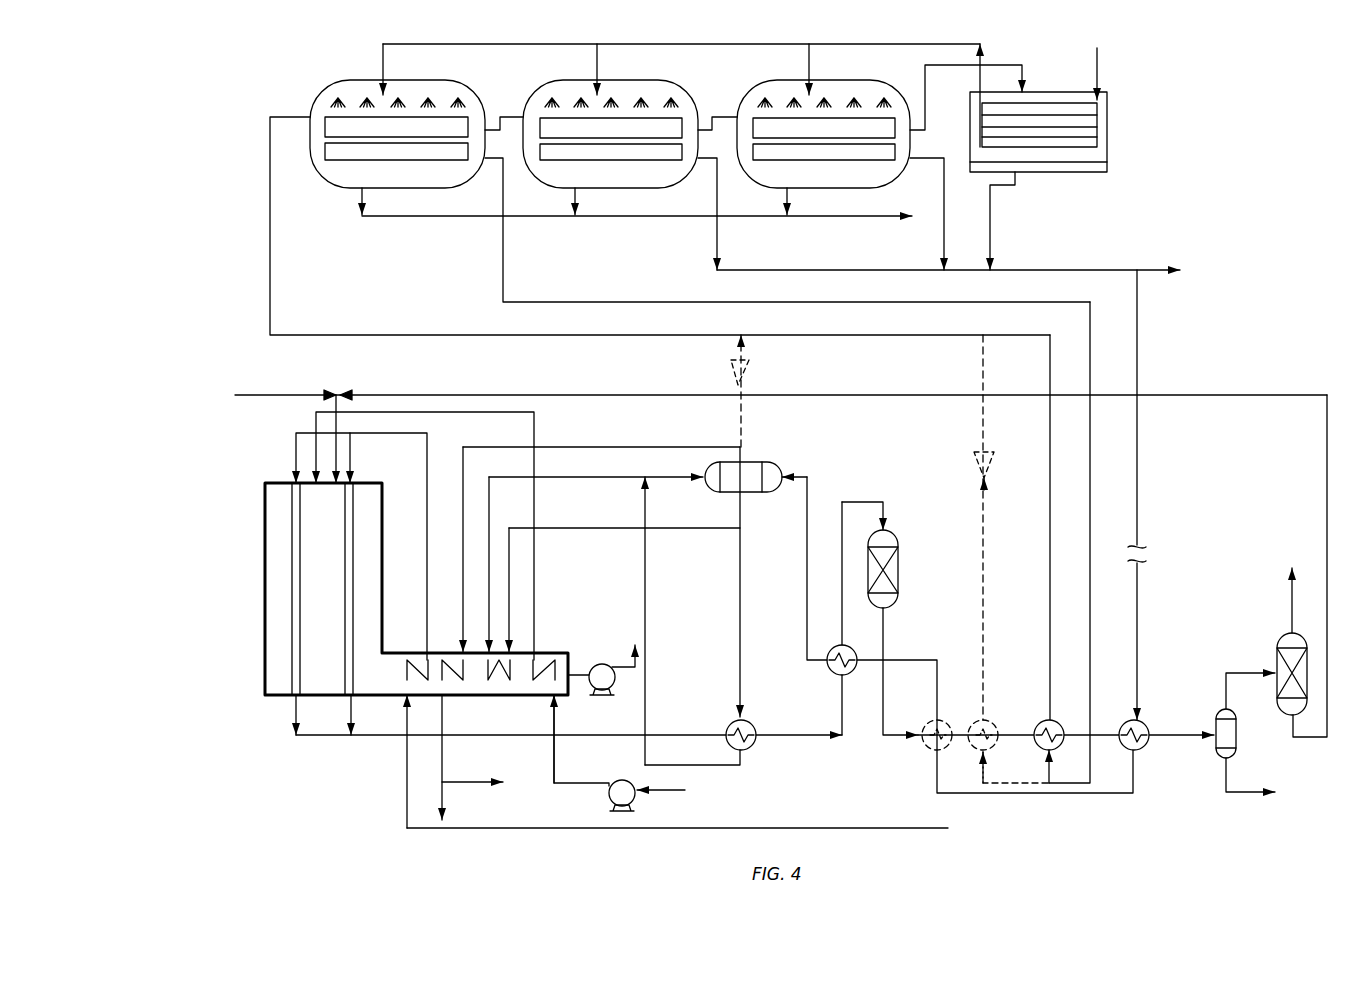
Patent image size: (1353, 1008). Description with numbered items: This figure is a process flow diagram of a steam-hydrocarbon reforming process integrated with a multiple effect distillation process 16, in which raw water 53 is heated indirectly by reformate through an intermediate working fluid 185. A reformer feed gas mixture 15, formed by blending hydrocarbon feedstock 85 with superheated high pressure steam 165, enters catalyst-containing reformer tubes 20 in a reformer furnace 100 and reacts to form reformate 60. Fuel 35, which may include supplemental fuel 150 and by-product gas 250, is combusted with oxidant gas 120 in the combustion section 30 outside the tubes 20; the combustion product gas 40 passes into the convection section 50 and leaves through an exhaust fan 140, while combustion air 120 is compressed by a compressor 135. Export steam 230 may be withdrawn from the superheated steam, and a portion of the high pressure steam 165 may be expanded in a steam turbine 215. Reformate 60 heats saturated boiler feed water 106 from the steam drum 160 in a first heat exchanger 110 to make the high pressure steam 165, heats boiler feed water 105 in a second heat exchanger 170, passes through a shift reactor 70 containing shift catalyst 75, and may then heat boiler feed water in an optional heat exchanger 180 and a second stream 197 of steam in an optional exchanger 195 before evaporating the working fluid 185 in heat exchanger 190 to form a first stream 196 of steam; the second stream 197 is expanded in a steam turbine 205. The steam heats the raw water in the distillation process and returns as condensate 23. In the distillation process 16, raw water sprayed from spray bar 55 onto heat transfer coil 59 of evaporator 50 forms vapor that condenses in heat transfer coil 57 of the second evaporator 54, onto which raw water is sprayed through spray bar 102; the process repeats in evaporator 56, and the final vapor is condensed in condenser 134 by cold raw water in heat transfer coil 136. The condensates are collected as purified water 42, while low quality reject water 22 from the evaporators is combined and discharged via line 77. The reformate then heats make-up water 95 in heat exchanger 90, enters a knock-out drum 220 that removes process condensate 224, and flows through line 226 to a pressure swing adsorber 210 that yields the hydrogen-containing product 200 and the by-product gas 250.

The reformer feed gas mixture 15 is at (396, 433).
The multiple effect distillation process 16 is at (276, 83).
The catalyst-containing reformer tubes 20 is at (292, 582).
The low quality reject water 22 is at (345, 190).
The condensate 23 is at (503, 262).
The combustion section 30 is at (316, 617).
The fuel 35 is at (337, 450).
The combustion product gas 40 is at (385, 672).
The purified water 42 is at (1077, 271).
The evaporator 50 is at (465, 186).
The raw water 53 is at (1097, 70).
The second evaporator 54 is at (683, 185).
The spray bar 55 is at (432, 100).
The evaporator 56 is at (900, 185).
The heat transfer coil 57 is at (678, 124).
The heat transfer coil 59 is at (456, 122).
The reformate 60 is at (577, 732).
The shift reactor 70 is at (890, 532).
The shift catalyst 75 is at (893, 573).
The brine line 77 is at (873, 225).
The hydrocarbon feedstock 85 is at (842, 827).
The heat exchanger 90 is at (1125, 722).
The make-up water 95 is at (1137, 632).
The reformer furnace 100 is at (265, 527).
The spray bar 102 is at (635, 98).
The boiler feed water 105 is at (807, 582).
The saturated boiler feed water 106 is at (740, 516).
The first heat exchanger 110 is at (730, 722).
The oxidant gas 120 is at (537, 595).
The condenser 134 is at (1107, 142).
The compressor 135 is at (610, 800).
The heat transfer coil 136 is at (1087, 125).
The exhaust fan 140 is at (600, 664).
The supplemental fuel 150 is at (272, 397).
The steam drum 160 is at (778, 462).
The high pressure steam 165 is at (600, 447).
The second heat exchanger 170 is at (832, 672).
The optional heat exchanger 180 is at (927, 722).
The working fluid 185 is at (1090, 520).
The heat exchanger 190 is at (1040, 722).
The optional heat exchanger 195 is at (973, 722).
The first stream of steam 196 is at (1049, 532).
The second stream of steam 197 is at (987, 602).
The H2-containing product 200 is at (1293, 605).
The steam turbine 205 is at (975, 461).
The pressure swing adsorber 210 is at (1277, 652).
The steam turbine 215 is at (733, 368).
The knock-out drum 220 is at (1237, 740).
The process condensate 224 is at (1252, 793).
The line 226 is at (1225, 683).
The export steam 230 is at (475, 782).
The by-product gas 250 is at (1327, 522).